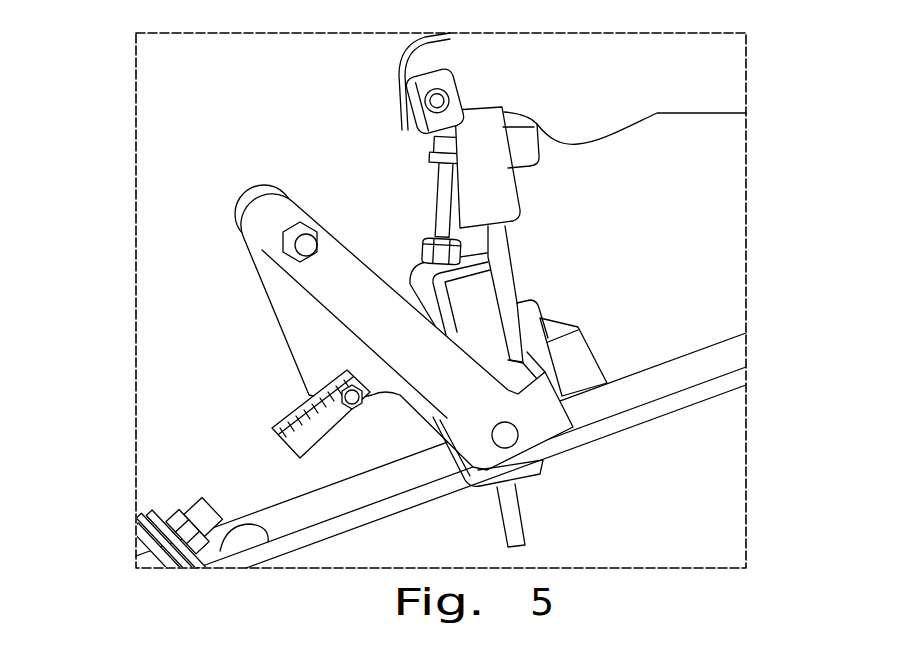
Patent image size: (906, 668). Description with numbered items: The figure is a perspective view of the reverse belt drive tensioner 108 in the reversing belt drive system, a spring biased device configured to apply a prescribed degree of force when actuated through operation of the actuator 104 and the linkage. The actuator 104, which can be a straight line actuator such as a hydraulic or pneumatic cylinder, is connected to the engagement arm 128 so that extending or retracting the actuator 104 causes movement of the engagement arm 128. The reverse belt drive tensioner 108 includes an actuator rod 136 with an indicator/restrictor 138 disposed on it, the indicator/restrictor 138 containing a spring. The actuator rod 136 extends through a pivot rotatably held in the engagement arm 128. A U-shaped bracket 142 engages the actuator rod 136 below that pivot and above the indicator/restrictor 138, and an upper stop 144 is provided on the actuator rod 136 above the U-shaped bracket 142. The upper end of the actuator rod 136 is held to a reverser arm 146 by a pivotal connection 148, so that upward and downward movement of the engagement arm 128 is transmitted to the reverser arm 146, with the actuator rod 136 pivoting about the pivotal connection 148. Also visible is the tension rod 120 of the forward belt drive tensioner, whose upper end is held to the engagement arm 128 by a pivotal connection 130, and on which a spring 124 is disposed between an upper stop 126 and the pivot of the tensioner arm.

The actuator 104 is at (519, 189).
The reverse belt drive tensioner 108 is at (345, 170).
The tension rod 120 is at (263, 459).
The spring 124 is at (145, 543).
The upper stop 126 is at (183, 513).
The engagement arm 128 is at (282, 327).
The pivotal connection 130 is at (352, 412).
The actuator rod 136 is at (438, 181).
The indicator/restrictor 138 is at (483, 297).
The U-shaped bracket 142 is at (420, 266).
The upper stop 144 is at (483, 250).
The reverser arm 146 is at (634, 123).
The pivotal connection 148 is at (443, 99).